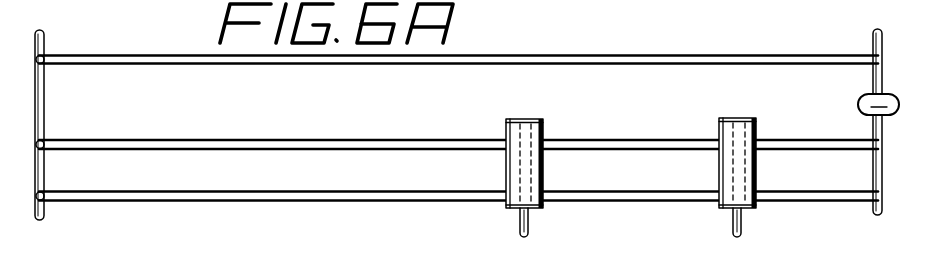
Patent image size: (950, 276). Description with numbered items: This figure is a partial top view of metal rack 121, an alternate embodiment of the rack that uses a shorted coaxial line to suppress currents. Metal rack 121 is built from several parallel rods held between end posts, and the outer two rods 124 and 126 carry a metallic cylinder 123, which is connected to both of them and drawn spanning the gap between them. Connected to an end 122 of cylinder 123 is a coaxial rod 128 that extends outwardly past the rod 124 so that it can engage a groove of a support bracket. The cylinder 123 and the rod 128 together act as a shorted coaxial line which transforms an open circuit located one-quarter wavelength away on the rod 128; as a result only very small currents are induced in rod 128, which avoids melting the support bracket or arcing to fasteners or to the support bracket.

The metal rack 121 is at (144, 208).
The end of cylinder 122 is at (525, 119).
The metallic cylinder 123 is at (545, 166).
The rod 124 is at (458, 202).
The rod 126 is at (405, 139).
The coaxial rod 128 is at (530, 220).